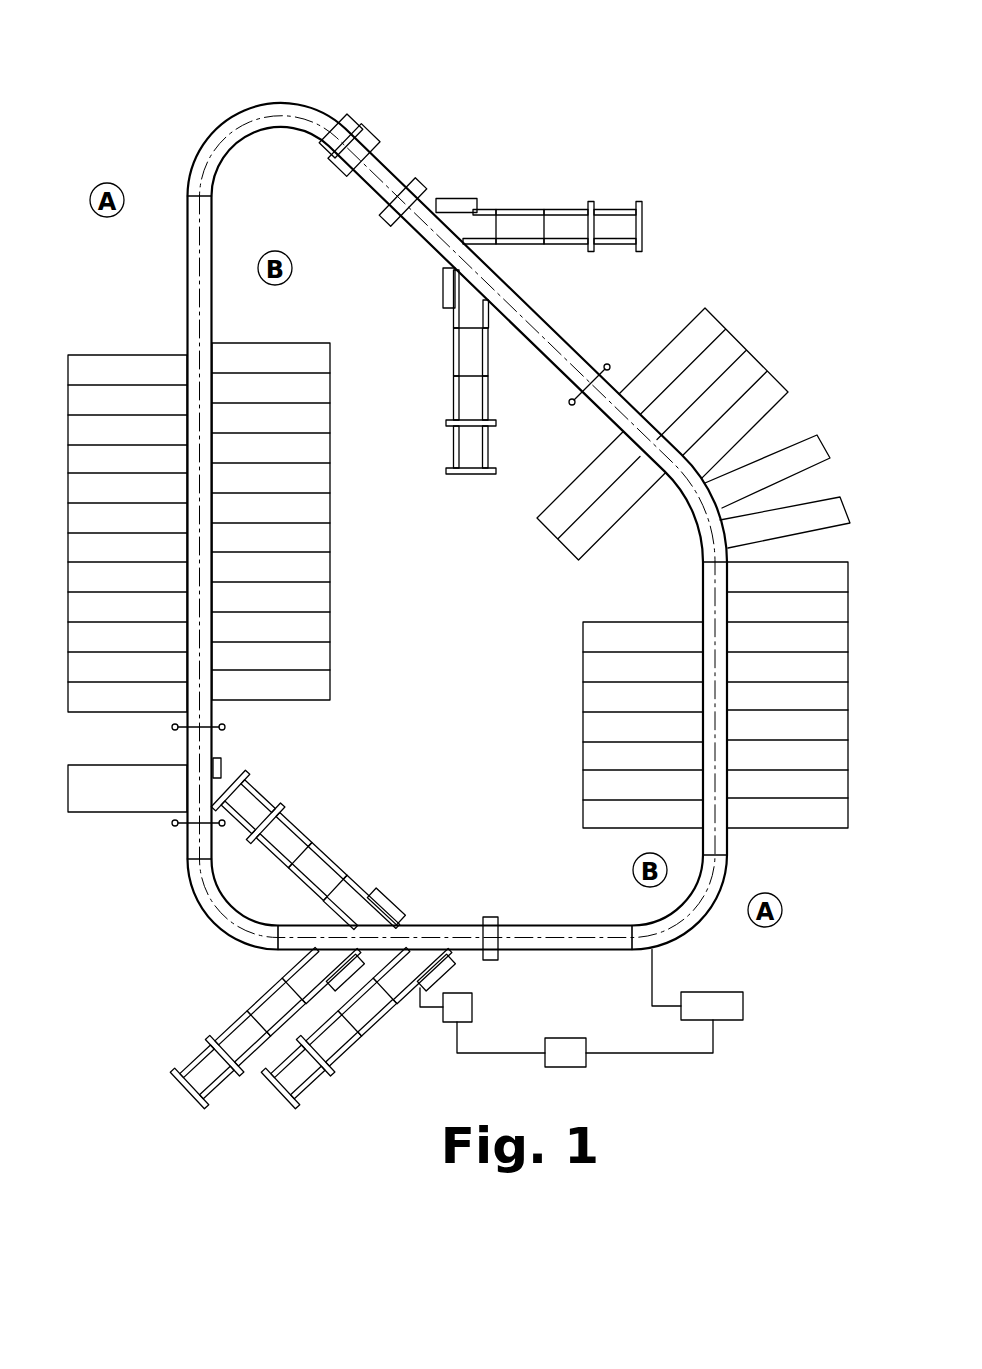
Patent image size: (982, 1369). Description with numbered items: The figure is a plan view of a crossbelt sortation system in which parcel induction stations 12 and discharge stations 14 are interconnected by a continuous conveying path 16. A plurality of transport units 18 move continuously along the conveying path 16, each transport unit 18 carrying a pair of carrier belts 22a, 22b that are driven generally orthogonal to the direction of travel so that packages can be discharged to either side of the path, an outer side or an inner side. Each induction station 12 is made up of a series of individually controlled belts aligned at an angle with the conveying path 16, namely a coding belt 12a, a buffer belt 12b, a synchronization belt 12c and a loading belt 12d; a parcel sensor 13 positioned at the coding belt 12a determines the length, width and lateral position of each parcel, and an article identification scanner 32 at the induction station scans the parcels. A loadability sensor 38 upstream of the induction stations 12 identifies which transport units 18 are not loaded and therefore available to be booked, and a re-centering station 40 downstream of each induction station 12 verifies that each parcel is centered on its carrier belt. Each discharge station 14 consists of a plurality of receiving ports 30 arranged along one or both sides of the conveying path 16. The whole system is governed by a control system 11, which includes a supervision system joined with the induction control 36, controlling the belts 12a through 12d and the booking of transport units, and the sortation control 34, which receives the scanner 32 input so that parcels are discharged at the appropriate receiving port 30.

The control system 11 is at (580, 1067).
The parcel induction station 12 is at (425, 645).
The coding belt 12a is at (470, 450).
The buffer belt 12b is at (470, 405).
The synchronization belt 12c is at (468, 357).
The loading belt 12d is at (468, 311).
The parcel sensor 13 is at (591, 203).
The discharge station 14 is at (342, 541).
The conveying path 16 is at (233, 110).
The transport unit 18 is at (353, 114).
The carrier belt 22a is at (350, 122).
The carrier belt 22b is at (322, 162).
The receiving port 30 is at (127, 355).
The article identification scanner 32 is at (642, 205).
The sortation control 34 is at (723, 992).
The induction control 36 is at (465, 993).
The loadability sensor 38 is at (609, 364).
The re-centering station 40 is at (427, 187).